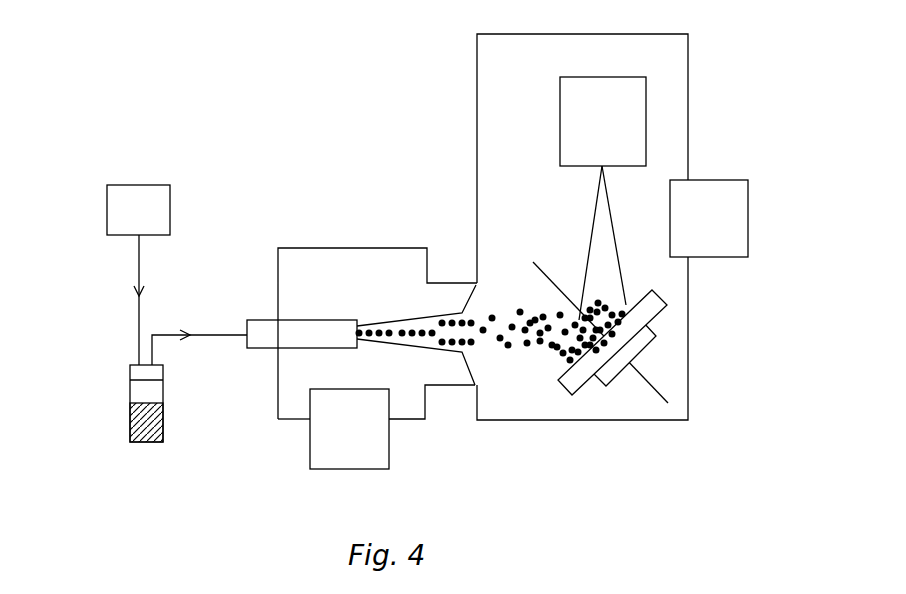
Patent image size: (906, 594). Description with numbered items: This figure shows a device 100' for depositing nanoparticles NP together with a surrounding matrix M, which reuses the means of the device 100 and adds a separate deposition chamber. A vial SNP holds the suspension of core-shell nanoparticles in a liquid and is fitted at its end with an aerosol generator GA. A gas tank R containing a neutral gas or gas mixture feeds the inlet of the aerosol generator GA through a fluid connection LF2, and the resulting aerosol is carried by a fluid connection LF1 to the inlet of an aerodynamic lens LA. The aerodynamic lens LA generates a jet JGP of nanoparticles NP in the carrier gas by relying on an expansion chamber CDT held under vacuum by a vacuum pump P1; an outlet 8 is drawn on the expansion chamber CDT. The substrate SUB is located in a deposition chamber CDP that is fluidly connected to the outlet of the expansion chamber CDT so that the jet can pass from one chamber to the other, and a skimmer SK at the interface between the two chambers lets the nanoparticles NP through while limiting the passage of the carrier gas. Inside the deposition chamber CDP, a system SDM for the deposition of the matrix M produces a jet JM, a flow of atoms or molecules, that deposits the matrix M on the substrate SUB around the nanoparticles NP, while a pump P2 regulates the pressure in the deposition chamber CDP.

The device 100' is at (141, 90).
The gas tank R is at (125, 185).
The fluid connection LF2 is at (136, 332).
The aerosol generator GA is at (128, 379).
The vial SNP is at (118, 426).
The fluid connection LF1 is at (228, 332).
The expansion chamber CDT is at (300, 275).
The aerodynamic lens LA is at (330, 335).
The skimmer SK is at (465, 290).
The jet of nanoparticles JGP is at (383, 318).
The vacuum pump P1 is at (340, 470).
The outlet 8 is at (447, 392).
The deposition chamber CDP is at (505, 105).
The system for the deposition of the matrix SDM is at (650, 117).
The pump P2 is at (712, 177).
The jet JM is at (605, 256).
The matrix M is at (632, 362).
The substrate SUB is at (655, 312).
The device 100 is at (677, 342).
The nanoparticles NP is at (552, 347).